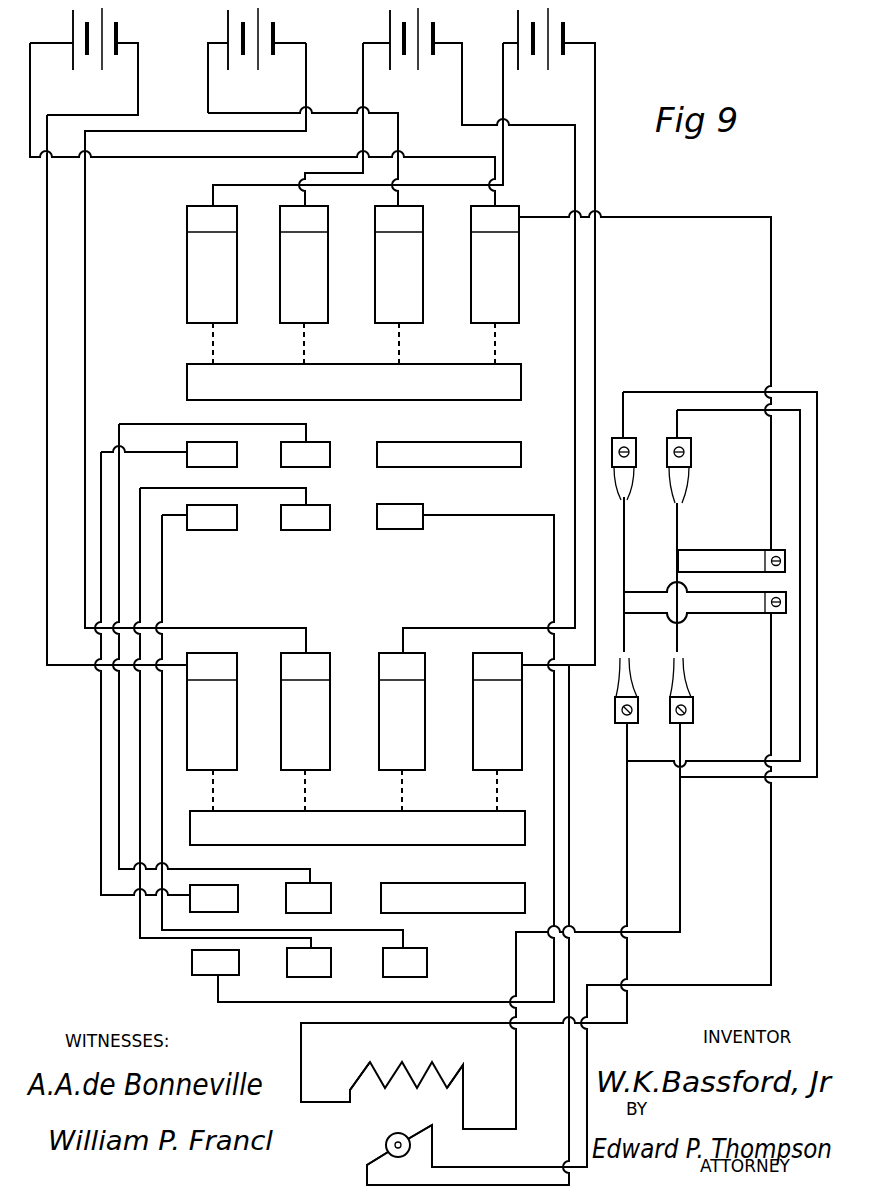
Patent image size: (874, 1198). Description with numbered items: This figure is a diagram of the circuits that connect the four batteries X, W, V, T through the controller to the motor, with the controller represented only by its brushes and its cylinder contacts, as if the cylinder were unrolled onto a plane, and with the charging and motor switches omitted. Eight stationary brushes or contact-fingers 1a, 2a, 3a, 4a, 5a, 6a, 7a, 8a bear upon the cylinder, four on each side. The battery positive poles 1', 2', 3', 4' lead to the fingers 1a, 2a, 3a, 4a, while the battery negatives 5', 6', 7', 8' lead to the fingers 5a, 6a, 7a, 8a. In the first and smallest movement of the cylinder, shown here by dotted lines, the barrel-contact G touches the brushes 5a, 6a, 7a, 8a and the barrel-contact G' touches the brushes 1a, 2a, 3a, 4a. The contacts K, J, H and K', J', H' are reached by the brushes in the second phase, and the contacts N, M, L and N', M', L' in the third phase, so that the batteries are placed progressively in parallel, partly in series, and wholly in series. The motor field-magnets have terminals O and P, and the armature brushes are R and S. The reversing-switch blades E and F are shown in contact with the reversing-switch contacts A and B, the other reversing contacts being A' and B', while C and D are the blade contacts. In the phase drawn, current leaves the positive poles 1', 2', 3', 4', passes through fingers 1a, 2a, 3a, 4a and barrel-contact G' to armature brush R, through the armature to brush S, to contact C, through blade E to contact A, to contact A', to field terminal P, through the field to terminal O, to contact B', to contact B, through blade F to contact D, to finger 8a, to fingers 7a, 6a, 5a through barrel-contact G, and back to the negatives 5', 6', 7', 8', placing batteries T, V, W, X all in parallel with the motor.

The battery X is at (94, 36).
The battery W is at (250, 36).
The battery V is at (411, 36).
The battery T is at (540, 36).
The positive pole 1' is at (577, 34).
The positive pole 2' is at (444, 31).
The positive pole 3' is at (287, 33).
The positive pole 4' is at (130, 34).
The battery negative 5' is at (520, 56).
The battery negative 6' is at (390, 56).
The battery negative 7' is at (228, 56).
The battery negative 8' is at (70, 56).
The contact-finger 1a is at (497, 711).
The contact-finger 2a is at (402, 711).
The contact-finger 3a is at (305, 711).
The contact-finger 4a is at (212, 711).
The contact-finger 5a is at (212, 264).
The contact-finger 6a is at (304, 264).
The contact-finger 7a is at (399, 264).
The contact-finger 8a is at (495, 264).
The barrel-contact G is at (354, 382).
The barrel-contact G' is at (357, 828).
The controller-barrel contact H is at (449, 454).
The controller-barrel contact H' is at (453, 898).
The controller-barrel contact J is at (305, 454).
The controller-barrel contact J' is at (308, 898).
The controller-barrel contact K is at (212, 454).
The controller-barrel contact K' is at (214, 898).
The controller-barrel contact L is at (400, 516).
The barrel-contact L' is at (405, 962).
The controller-barrel contact M is at (305, 517).
The controller-barrel contact M' is at (309, 962).
The controller-barrel contact N is at (212, 517).
The controller-barrel contact N' is at (215, 962).
The reversing-switch contact A is at (628, 457).
The reversing-switch contact B is at (684, 459).
The reversing-switch contact A' is at (690, 706).
The reversing-switch contact B' is at (617, 706).
The reversing-switch-blade contact C is at (707, 612).
The reversing-switch-blade contact D is at (734, 549).
The reversing-switch blade E is at (619, 538).
The reversing-switch blade F is at (666, 577).
The motor-field terminal O is at (351, 1094).
The motor-field terminal P is at (465, 1097).
The armature brush R is at (364, 1168).
The armature brush S is at (412, 1134).